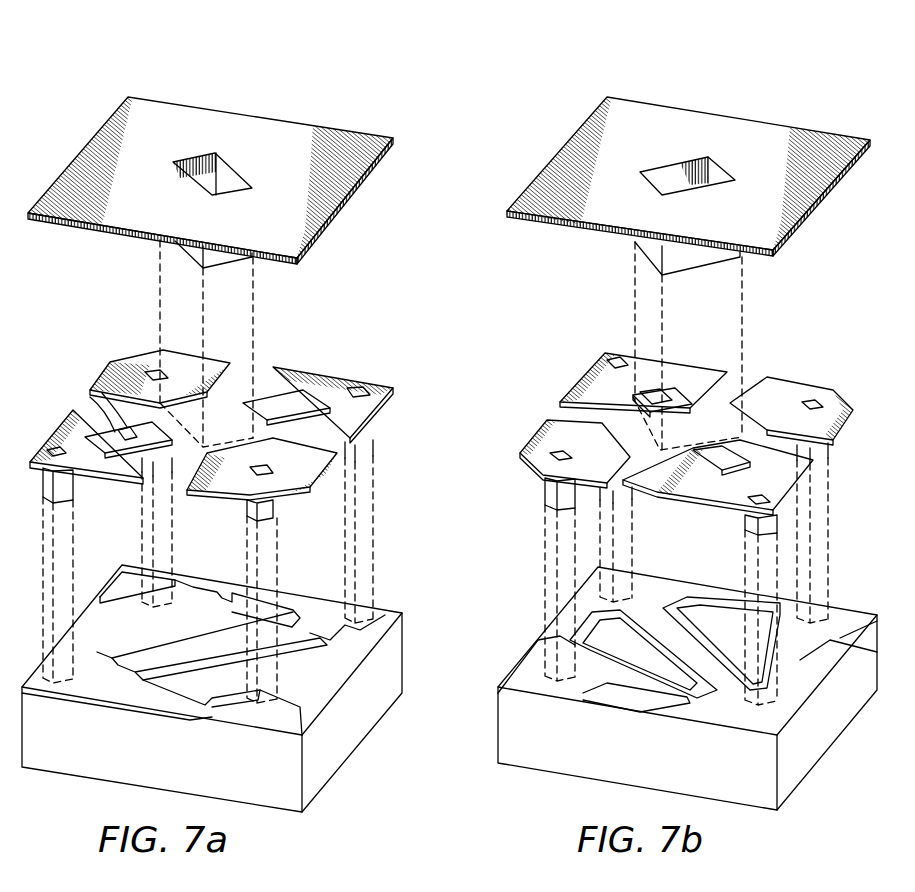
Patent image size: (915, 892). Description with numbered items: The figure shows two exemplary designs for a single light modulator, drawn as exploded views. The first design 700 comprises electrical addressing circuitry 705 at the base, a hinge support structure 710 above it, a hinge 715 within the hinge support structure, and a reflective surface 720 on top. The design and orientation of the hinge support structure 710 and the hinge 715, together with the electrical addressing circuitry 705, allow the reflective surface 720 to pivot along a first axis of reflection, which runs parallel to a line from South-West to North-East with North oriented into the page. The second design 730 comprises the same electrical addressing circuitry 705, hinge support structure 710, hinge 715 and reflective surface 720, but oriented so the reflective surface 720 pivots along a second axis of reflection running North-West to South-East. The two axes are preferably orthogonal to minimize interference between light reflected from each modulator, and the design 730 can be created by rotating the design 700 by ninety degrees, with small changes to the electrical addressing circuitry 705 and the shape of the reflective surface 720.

In FIG. 7a, the design for a single light modulator 700 is at (160, 66).
In FIG. 7a, the electrical addressing circuitry 705 is at (395, 606).
In FIG. 7b, the electrical addressing circuitry 705 is at (860, 603).
In FIG. 7a, the hinge support structure 710 is at (320, 360).
In FIG. 7b, the hinge support structure 710 is at (795, 356).
In FIG. 7a, the hinge 715 is at (130, 437).
In FIG. 7b, the hinge 715 is at (657, 395).
In FIG. 7a, the reflective surface 720 is at (318, 108).
In FIG. 7b, the reflective surface 720 is at (793, 108).
In FIG. 7b, the design for a single light modulator 730 is at (628, 66).